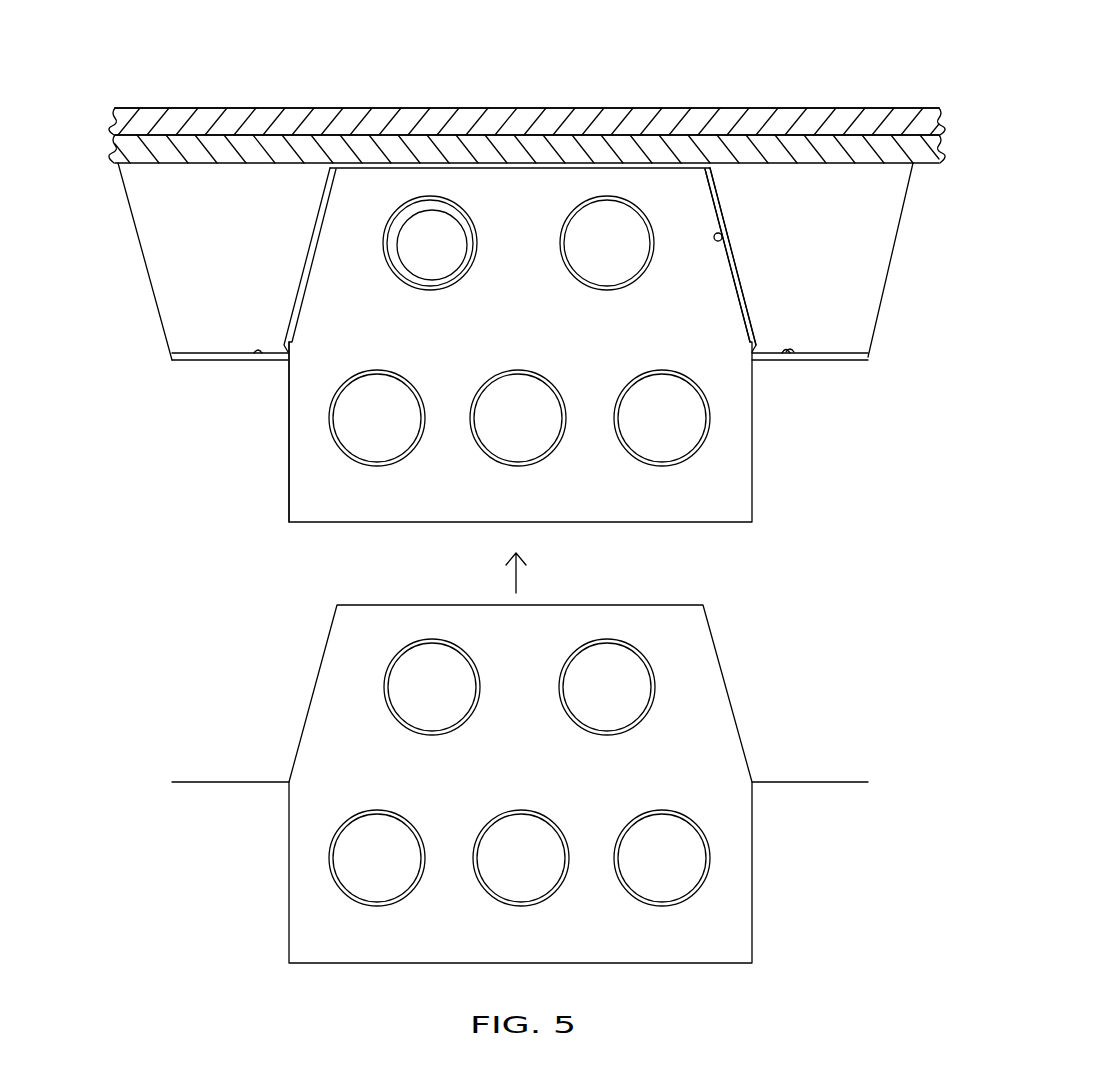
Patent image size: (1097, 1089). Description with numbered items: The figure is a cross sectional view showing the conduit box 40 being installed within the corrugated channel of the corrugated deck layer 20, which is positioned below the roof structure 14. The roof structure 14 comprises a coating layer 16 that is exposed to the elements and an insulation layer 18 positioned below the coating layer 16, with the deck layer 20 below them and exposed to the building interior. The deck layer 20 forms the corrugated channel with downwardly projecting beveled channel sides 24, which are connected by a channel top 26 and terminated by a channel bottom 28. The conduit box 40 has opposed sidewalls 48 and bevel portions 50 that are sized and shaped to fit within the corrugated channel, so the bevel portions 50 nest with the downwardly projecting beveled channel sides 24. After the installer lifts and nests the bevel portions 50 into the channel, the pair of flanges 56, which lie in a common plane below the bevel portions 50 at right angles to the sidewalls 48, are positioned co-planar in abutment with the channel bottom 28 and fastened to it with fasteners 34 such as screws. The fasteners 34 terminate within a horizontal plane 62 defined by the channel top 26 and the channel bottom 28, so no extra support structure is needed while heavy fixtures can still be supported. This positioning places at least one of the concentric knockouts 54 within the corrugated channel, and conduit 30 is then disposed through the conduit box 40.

The roof structure 14 is at (627, 66).
The coating layer 16 is at (396, 108).
The insulation layer 18 is at (172, 148).
The deck layer 20 is at (909, 196).
The downwardly projecting beveled channel sides 24 is at (748, 300).
The channel top 26 is at (150, 165).
The channel bottom 28 is at (869, 353).
The conduit 30 is at (468, 238).
The fasteners 34 is at (795, 360).
The conduit box 40 is at (520, 565).
The sidewalls 48 is at (289, 456).
The bevel portions 50 is at (722, 238).
The concentric knockouts 54 is at (642, 211).
The flanges 56 is at (869, 362).
The horizontal plane 62 is at (857, 280).